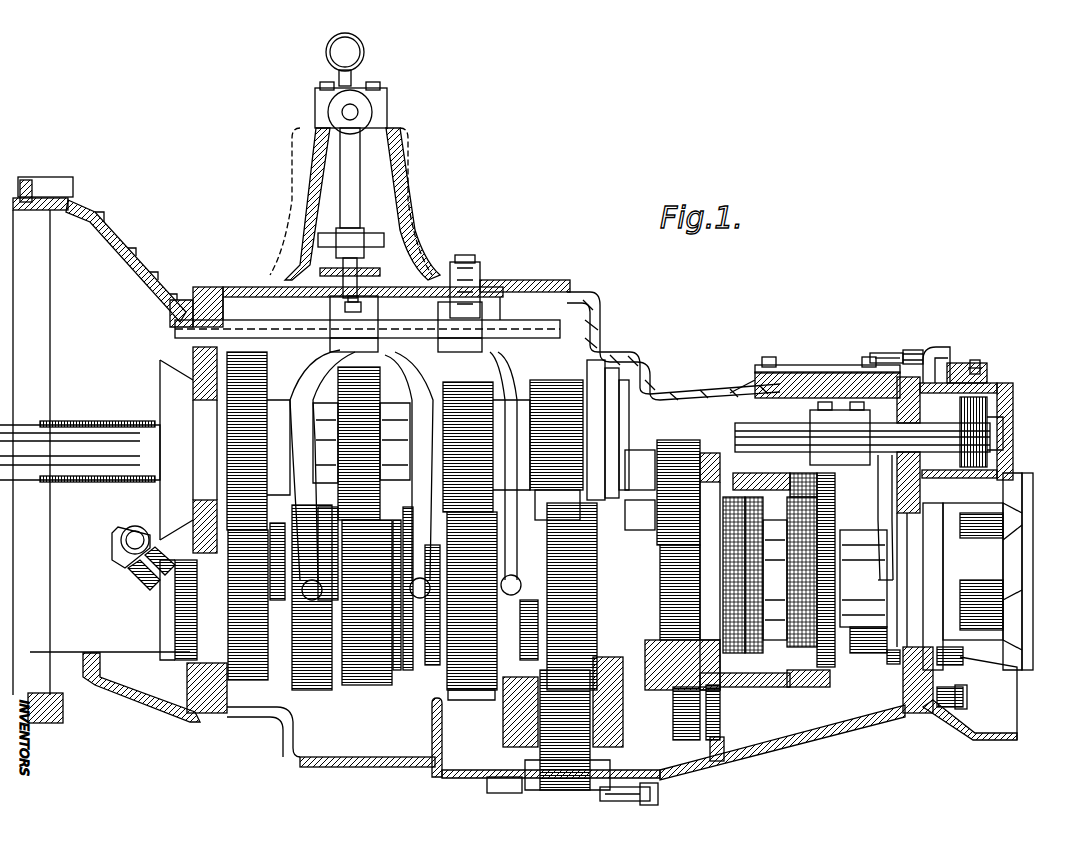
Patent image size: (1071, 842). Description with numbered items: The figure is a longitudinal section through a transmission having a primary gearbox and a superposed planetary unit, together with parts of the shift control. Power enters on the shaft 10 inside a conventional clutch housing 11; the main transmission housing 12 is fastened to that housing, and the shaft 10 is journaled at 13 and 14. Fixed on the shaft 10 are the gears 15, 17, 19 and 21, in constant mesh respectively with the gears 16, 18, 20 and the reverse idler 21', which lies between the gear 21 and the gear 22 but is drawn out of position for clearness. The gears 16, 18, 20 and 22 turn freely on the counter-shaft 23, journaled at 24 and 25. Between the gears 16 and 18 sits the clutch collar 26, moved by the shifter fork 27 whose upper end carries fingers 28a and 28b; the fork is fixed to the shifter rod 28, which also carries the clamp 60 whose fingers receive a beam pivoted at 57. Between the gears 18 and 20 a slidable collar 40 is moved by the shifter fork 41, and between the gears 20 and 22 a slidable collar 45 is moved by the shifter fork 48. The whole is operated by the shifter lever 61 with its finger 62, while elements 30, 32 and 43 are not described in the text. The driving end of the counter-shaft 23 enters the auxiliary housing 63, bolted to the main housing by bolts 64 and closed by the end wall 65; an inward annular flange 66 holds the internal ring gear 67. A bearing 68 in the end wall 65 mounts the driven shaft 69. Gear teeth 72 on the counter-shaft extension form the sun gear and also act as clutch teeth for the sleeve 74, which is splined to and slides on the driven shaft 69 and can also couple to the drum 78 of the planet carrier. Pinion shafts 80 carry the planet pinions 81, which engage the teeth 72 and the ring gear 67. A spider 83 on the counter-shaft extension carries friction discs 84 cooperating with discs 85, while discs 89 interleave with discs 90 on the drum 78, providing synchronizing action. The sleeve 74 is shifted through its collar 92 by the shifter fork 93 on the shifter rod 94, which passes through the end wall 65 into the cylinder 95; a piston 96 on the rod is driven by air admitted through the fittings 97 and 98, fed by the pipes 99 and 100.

The shaft 10 is at (120, 470).
The clutch housing 11 is at (65, 705).
The main transmission housing 12 is at (340, 768).
The journal 13 is at (205, 430).
The journal 14 is at (600, 392).
The gear 15 is at (268, 360).
The gear 16 is at (245, 680).
The gear 17 is at (380, 385).
The gear 18 is at (365, 685).
The gear 19 is at (500, 400).
The gear 20 is at (460, 690).
The gear 21 is at (556, 438).
The reverse idler 21' is at (548, 742).
The gear 22 is at (580, 572).
The shaft 23 is at (165, 597).
The journal 24 is at (185, 660).
The journal 25 is at (610, 680).
The clutch collar 26 is at (315, 690).
The shifter fork 27 is at (302, 384).
The shifter rod 28 is at (298, 338).
The finger 28a is at (378, 300).
The finger 28b is at (345, 304).
The clutch ring 30 is at (278, 523).
The clutch ring 32 is at (332, 507).
The slidable collar 40 is at (432, 665).
The shifter fork 41 is at (418, 493).
The countershaft gear 43 is at (405, 670).
The slidable collar 45 is at (530, 660).
The shifter fork 48 is at (480, 366).
The pivot 57 is at (480, 268).
The clamp 60 is at (460, 352).
The shifter lever 61 is at (365, 52).
The finger 62 is at (360, 290).
The auxiliary housing 63 is at (815, 745).
The bolts 64 is at (658, 795).
The end wall 65 is at (903, 690).
The annular flange 66 is at (724, 745).
The internal ring gear 67 is at (673, 705).
The bearing 68 is at (887, 660).
The driven shaft 69 is at (1035, 558).
The gear teeth 72 is at (715, 690).
The sleeve 74 is at (848, 530).
The drum 78 is at (755, 653).
The pinion shafts 80 is at (740, 482).
The planet pinions 81 is at (657, 443).
The spider 83 is at (733, 653).
The friction discs 84 is at (800, 647).
The friction discs 85 is at (815, 470).
The friction discs 89 is at (825, 500).
The friction discs 90 is at (830, 676).
The collar 92 is at (860, 627).
The shifter fork 93 is at (877, 496).
The shifter rod 94 is at (780, 432).
The cylinder 95 is at (965, 363).
The piston 96 is at (968, 478).
The fitting 97 is at (980, 362).
The fitting 98 is at (915, 350).
The pipe 99 is at (945, 347).
The pipe 100 is at (888, 353).